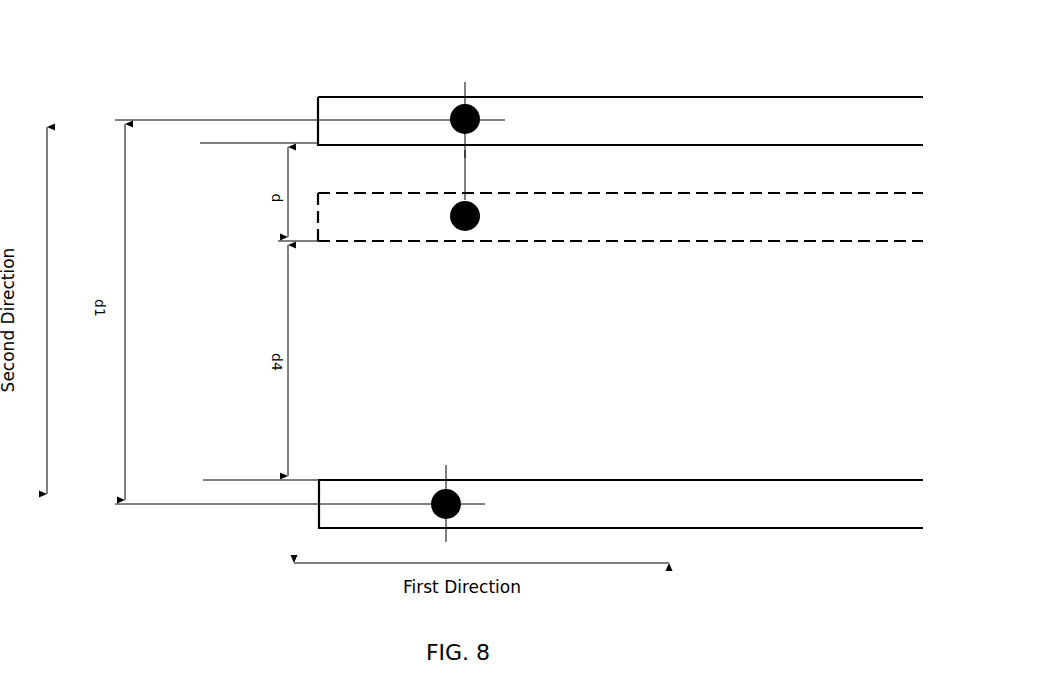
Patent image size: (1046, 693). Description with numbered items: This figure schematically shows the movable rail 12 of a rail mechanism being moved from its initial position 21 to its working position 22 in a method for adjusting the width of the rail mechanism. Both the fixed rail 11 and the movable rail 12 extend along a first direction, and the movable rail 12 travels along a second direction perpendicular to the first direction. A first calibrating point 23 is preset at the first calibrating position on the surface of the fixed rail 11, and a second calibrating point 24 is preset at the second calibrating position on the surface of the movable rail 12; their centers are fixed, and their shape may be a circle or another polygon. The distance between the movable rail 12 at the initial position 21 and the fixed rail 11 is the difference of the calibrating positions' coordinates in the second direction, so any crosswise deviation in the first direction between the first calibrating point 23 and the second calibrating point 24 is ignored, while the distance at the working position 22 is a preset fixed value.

The fixed rail 11 is at (690, 502).
The movable rail 12 is at (620, 169).
The initial position 21 is at (567, 113).
The working position 22 is at (595, 227).
The first calibrating point 23 is at (458, 492).
The second calibrating point 24 is at (480, 112).